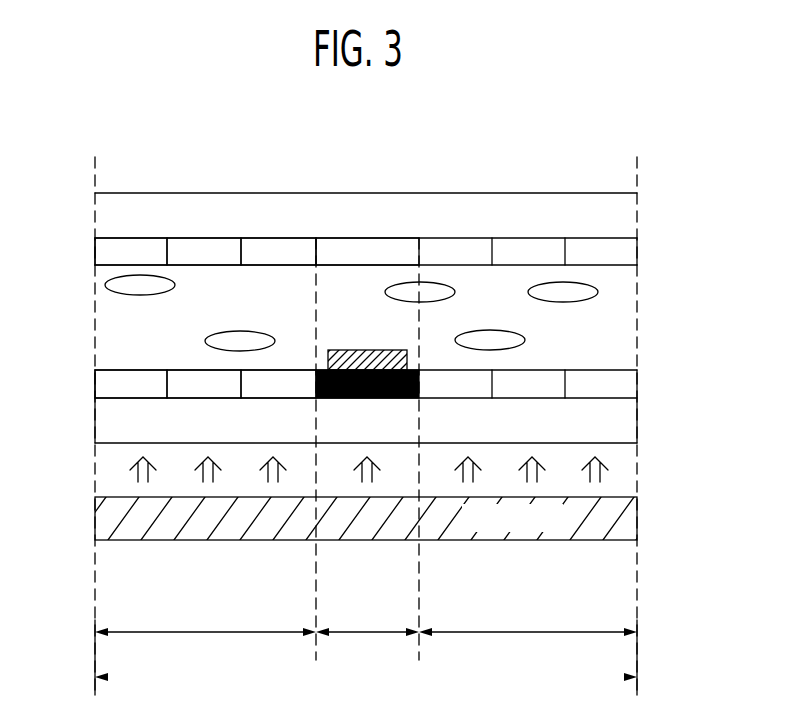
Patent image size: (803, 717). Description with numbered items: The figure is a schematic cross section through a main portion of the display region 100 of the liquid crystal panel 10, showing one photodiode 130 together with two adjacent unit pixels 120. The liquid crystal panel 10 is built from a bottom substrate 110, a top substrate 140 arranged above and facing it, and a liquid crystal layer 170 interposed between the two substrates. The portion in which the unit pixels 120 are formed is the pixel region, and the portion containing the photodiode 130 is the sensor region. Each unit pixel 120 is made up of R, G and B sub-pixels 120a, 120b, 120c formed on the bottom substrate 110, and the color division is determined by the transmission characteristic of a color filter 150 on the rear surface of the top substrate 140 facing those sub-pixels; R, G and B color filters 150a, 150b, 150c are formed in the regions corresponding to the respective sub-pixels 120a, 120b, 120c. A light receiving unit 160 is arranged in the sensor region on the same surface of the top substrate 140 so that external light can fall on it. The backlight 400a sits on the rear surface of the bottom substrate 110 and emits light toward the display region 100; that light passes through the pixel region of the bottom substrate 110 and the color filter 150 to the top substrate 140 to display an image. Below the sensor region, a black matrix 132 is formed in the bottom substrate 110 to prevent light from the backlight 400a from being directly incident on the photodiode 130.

The liquid crystal panel 10 is at (85, 198).
The display region 100 is at (107, 677).
The bottom substrate 110 is at (623, 422).
The unit pixels 120 is at (366, 495).
The R sub-pixel 120a is at (148, 389).
The G sub-pixel 120b is at (218, 389).
The B sub-pixel 120c is at (288, 389).
The photodiode 130 is at (358, 350).
The black matrix 132 is at (343, 399).
The top substrate 140 is at (623, 210).
The color filter 150 is at (366, 185).
The R color filter 150a is at (142, 245).
The G color filter 150b is at (205, 245).
The B color filter 150c is at (284, 206).
The light receiving unit 160 is at (340, 247).
The liquid crystal layer 170 is at (623, 322).
The backlight 400a is at (628, 512).